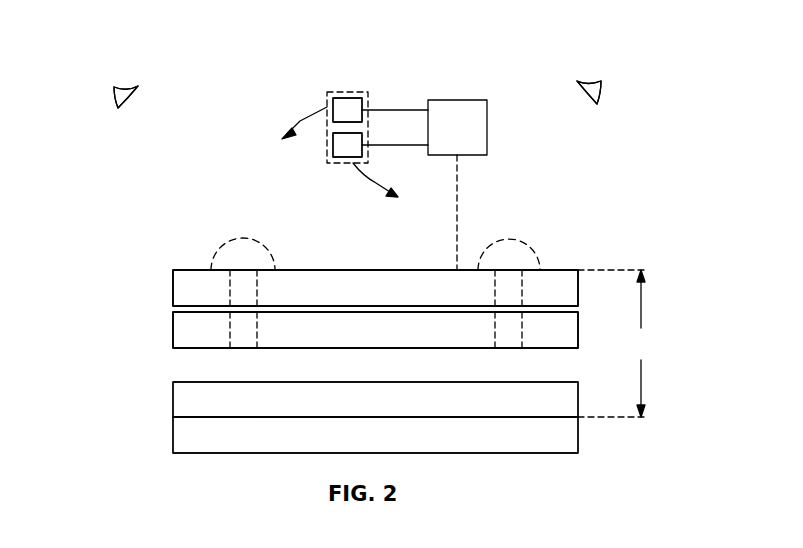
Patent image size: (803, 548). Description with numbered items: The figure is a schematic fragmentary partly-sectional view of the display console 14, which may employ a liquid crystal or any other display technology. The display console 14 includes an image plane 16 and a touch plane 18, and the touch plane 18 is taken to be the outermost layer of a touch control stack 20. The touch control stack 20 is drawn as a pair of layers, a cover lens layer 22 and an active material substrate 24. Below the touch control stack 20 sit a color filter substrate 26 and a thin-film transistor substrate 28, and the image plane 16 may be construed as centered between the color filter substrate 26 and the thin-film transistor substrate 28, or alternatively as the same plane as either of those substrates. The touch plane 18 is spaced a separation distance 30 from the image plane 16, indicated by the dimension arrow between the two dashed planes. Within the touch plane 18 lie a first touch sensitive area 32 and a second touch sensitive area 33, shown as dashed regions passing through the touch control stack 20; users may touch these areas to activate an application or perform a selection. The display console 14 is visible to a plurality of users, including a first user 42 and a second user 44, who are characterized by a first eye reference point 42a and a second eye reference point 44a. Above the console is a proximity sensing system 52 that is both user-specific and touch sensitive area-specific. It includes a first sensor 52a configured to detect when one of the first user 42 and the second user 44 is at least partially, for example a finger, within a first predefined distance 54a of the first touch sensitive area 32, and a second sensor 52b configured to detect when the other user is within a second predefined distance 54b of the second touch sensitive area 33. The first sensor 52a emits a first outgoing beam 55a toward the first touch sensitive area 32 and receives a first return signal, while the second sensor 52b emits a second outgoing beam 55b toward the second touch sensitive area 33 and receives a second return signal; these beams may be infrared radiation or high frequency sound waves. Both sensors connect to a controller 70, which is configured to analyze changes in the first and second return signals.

The display console 14 is at (90, 270).
The image plane 16 is at (648, 420).
The touch plane 18 is at (648, 268).
The touch control stack 20 is at (168, 270).
The cover lens layer 22 is at (388, 302).
The active material substrate 24 is at (388, 344).
The color filter substrate 26 is at (388, 409).
The thin-film transistor substrate 28 is at (388, 447).
The separation distance 30 is at (643, 343).
The first touch sensitive area 32 is at (230, 287).
The second touch sensitive area 33 is at (522, 287).
The first user 42 is at (116, 47).
The first eye reference point 42a is at (119, 106).
The second user 44 is at (618, 48).
The second eye reference point 44a is at (596, 103).
The proximity sensing system 52 is at (356, 93).
The first sensor 52a is at (343, 98).
The second sensor 52b is at (343, 158).
The first predefined distance 54a is at (228, 241).
The second predefined distance 54b is at (529, 241).
The first outgoing beam 55a is at (300, 121).
The second outgoing beam 55b is at (386, 193).
The controller 70 is at (440, 100).